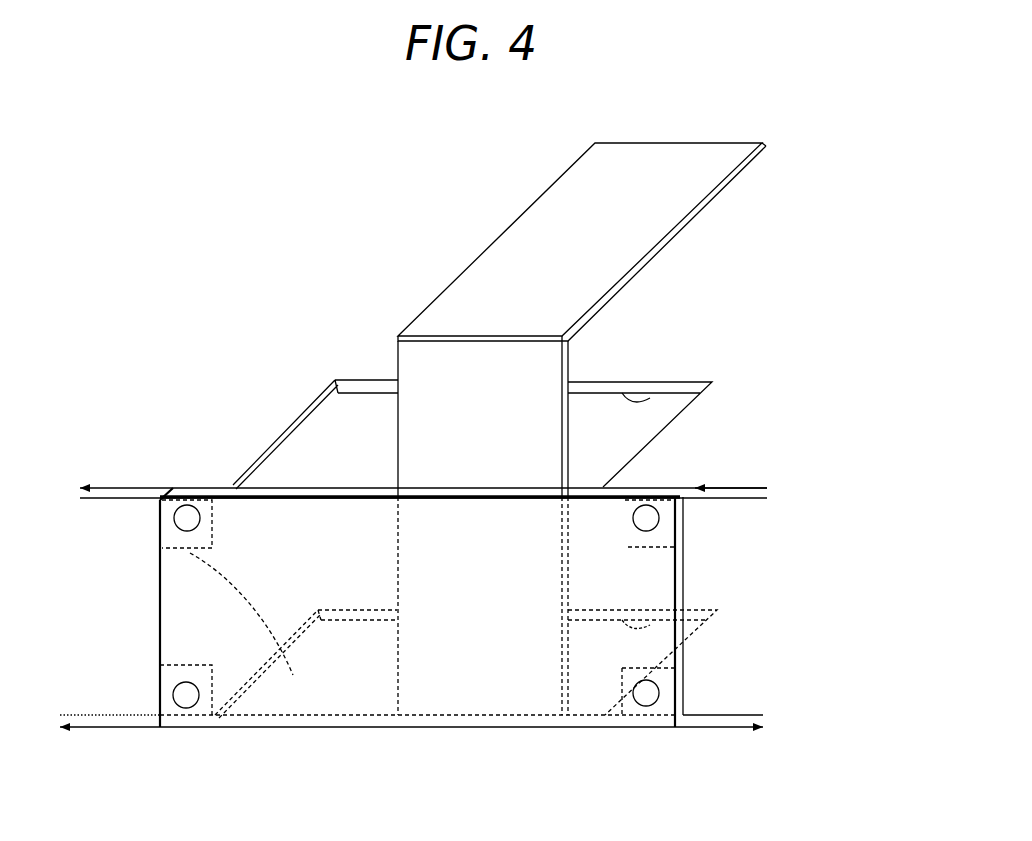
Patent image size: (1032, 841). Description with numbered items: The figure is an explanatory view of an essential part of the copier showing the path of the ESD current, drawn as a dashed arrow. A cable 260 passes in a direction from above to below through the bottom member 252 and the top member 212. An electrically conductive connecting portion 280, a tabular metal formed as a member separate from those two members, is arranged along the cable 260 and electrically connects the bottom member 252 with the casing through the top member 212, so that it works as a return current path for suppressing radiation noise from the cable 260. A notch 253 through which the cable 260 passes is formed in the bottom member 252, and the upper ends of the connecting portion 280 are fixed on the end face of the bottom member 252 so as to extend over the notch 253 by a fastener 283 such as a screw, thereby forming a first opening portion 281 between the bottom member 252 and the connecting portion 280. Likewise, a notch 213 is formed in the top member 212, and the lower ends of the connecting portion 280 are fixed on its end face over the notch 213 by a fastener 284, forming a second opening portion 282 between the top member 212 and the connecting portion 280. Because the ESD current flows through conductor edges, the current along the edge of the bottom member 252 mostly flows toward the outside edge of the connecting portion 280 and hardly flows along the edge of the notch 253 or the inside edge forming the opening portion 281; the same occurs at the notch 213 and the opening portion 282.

The cable 260 is at (527, 225).
The connecting portion 280 is at (308, 532).
The opening portion 281 is at (347, 437).
The notch 253 is at (673, 382).
The notch 213 is at (677, 612).
The opening portion 282 is at (160, 543).
The bottom member 252 is at (757, 458).
The top member 212 is at (758, 682).
The fastener 283 is at (197, 517).
The fastener 284 is at (188, 700).